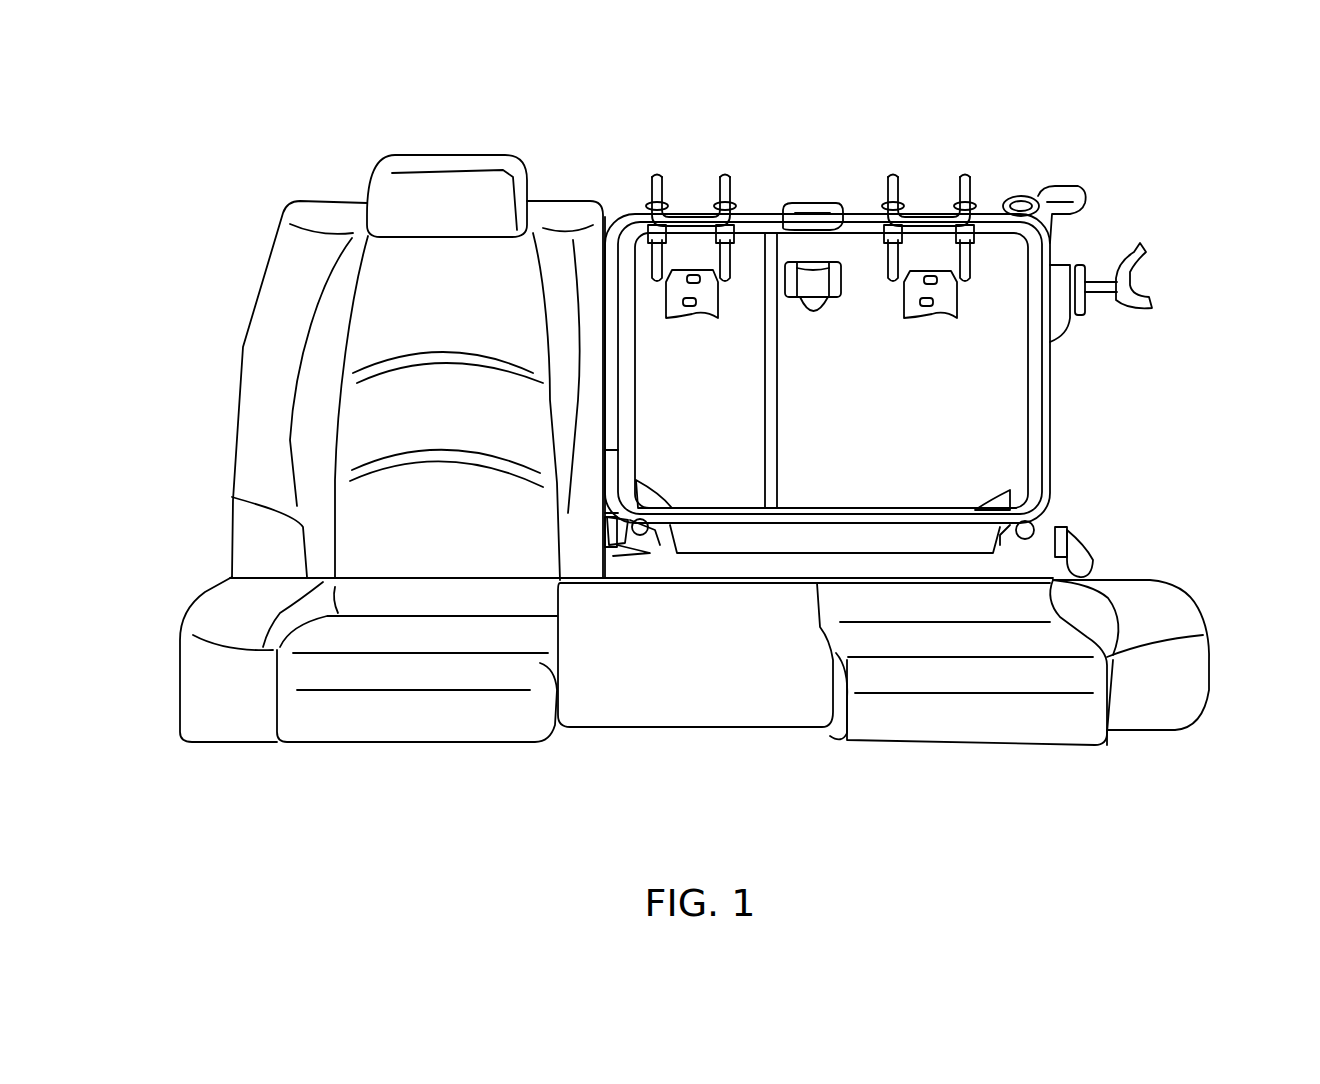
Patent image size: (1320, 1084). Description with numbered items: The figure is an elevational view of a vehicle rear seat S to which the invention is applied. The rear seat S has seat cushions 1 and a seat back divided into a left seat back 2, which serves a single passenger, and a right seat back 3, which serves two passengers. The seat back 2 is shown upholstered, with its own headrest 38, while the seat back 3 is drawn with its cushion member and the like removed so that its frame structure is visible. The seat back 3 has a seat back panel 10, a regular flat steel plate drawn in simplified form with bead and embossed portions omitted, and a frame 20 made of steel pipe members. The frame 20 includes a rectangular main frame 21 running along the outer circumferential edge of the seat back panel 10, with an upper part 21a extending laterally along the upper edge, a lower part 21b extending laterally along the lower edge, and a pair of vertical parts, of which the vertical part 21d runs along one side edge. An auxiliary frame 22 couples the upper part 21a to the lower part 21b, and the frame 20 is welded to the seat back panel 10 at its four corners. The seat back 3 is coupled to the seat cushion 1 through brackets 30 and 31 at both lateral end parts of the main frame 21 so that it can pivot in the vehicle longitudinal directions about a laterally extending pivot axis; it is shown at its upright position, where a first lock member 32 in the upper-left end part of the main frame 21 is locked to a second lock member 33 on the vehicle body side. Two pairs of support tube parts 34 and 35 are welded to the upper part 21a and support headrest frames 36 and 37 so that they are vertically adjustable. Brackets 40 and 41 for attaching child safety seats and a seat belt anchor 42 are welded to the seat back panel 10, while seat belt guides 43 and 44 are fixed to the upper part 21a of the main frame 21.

The rear seat S is at (197, 173).
The seat cushion 1 is at (435, 727).
The seat back 2 is at (372, 310).
The seat back 3 is at (1057, 404).
The seat back panel 10 is at (1005, 447).
The frame 20 is at (1038, 373).
The main frame 21 is at (827, 470).
The upper part 21a is at (857, 230).
The lower part 21b is at (873, 517).
The vertical part 21d is at (633, 403).
The auxiliary frame 22 is at (777, 445).
The bracket 30 is at (1067, 530).
The bracket 31 is at (605, 560).
The first lock member 32 is at (1082, 267).
The second lock member 33 is at (1147, 243).
The support tube parts 34 is at (877, 220).
The support tube parts 35 is at (648, 222).
The headrest frame 36 is at (925, 212).
The headrest frame 37 is at (683, 215).
The headrest 38 is at (433, 187).
The bracket 40 is at (947, 313).
The bracket 41 is at (707, 313).
The seat belt anchor 42 is at (820, 283).
The seat belt guide 43 is at (1023, 197).
The seat belt guide 44 is at (830, 205).